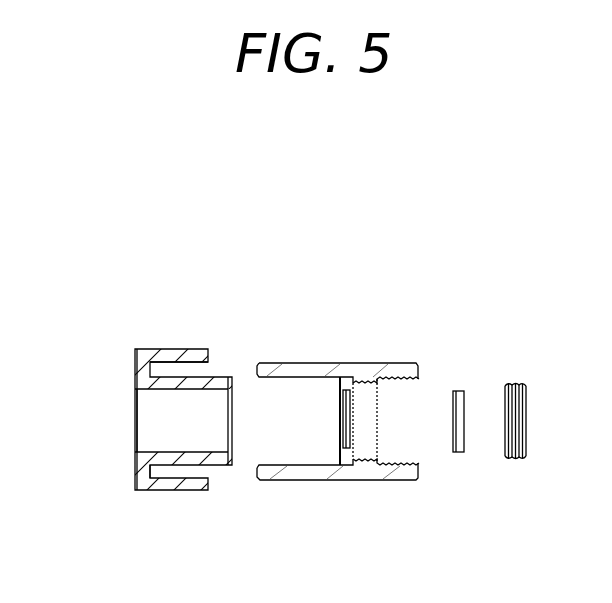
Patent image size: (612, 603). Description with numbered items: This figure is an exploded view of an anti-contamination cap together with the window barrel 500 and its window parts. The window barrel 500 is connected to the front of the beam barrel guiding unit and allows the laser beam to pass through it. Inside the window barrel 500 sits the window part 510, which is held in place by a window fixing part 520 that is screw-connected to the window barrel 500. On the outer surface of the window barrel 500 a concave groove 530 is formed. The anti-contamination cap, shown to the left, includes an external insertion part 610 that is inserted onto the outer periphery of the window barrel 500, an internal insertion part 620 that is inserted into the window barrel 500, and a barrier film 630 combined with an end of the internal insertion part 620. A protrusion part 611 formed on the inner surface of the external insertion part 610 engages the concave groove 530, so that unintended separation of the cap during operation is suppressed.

The window barrel 500 is at (368, 365).
The window part 510 is at (455, 390).
The window fixing part 520 is at (512, 383).
The concave groove 530 is at (292, 363).
The external insertion part 610 is at (163, 352).
The protrusion part 611 is at (186, 361).
The internal insertion part 620 is at (187, 458).
The barrier film 630 is at (230, 422).